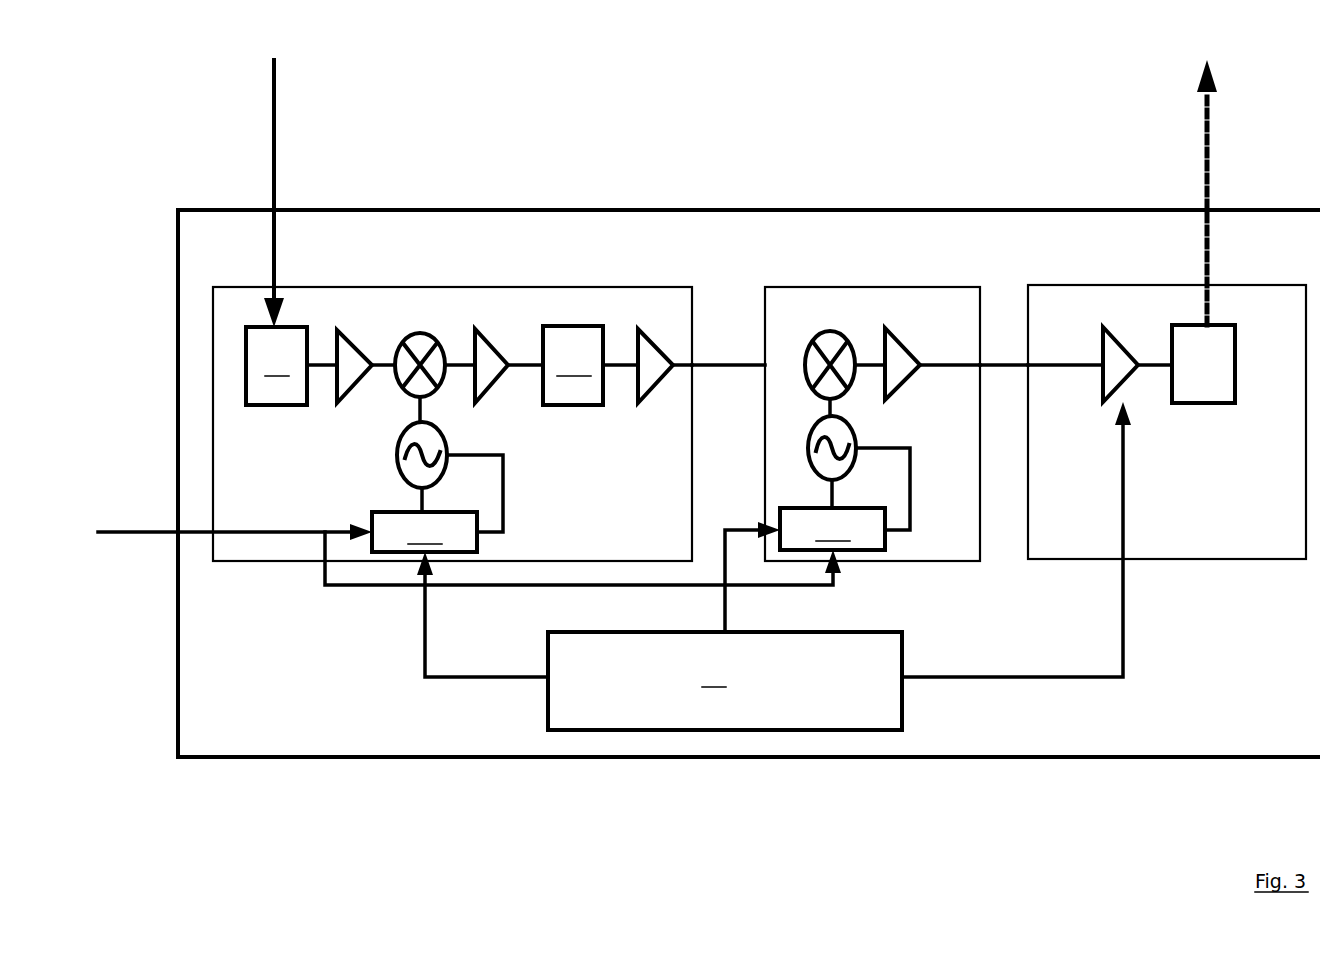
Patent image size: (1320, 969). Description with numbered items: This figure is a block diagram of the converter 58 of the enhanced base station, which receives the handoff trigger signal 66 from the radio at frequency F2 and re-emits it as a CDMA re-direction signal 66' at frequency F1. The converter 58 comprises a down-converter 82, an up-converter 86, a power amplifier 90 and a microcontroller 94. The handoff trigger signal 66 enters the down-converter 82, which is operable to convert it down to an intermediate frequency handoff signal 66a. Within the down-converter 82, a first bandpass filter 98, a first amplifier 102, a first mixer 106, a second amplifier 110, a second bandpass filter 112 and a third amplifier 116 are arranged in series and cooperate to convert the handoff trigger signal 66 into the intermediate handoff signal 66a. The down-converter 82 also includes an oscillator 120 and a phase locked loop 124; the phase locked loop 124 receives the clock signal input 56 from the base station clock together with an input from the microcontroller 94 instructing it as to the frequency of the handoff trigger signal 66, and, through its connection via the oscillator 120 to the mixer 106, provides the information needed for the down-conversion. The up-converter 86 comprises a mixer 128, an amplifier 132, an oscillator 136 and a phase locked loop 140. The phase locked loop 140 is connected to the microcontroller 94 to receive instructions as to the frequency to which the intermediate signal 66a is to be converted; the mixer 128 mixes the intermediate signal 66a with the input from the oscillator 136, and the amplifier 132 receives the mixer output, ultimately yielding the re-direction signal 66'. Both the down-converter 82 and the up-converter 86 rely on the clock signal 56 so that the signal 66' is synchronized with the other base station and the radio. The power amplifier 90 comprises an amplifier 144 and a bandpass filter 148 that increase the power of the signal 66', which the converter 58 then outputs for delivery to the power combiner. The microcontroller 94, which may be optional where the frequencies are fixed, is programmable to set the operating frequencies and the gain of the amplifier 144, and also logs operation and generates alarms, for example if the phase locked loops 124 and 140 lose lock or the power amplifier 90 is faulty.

The clock signal input 56 is at (102, 532).
The converter 58 is at (363, 760).
The handoff trigger signal 66 is at (260, 178).
The CDMA re-direction signal 66' is at (1128, 194).
The intermediate frequency handoff signal 66a is at (720, 360).
The down-converter 82 is at (592, 285).
The up-converter 86 is at (900, 283).
The power amplifier 90 is at (1088, 285).
The microcontroller 94 is at (774, 566).
The first bandpass filter 98 is at (276, 366).
The first amplifier 102 is at (357, 330).
The first mixer 106 is at (435, 333).
The second amplifier 110 is at (490, 345).
The second bandpass filter 112 is at (573, 365).
The third amplifier 116 is at (657, 383).
The oscillator 120 is at (396, 460).
The phase locked loop 124 is at (424, 532).
The mixer 128 is at (838, 332).
The amplifier 132 is at (907, 340).
The oscillator 136 is at (805, 451).
The phase locked loop 140 is at (832, 529).
The amplifier 144 is at (1132, 373).
The bandpass filter 148 is at (1203, 364).